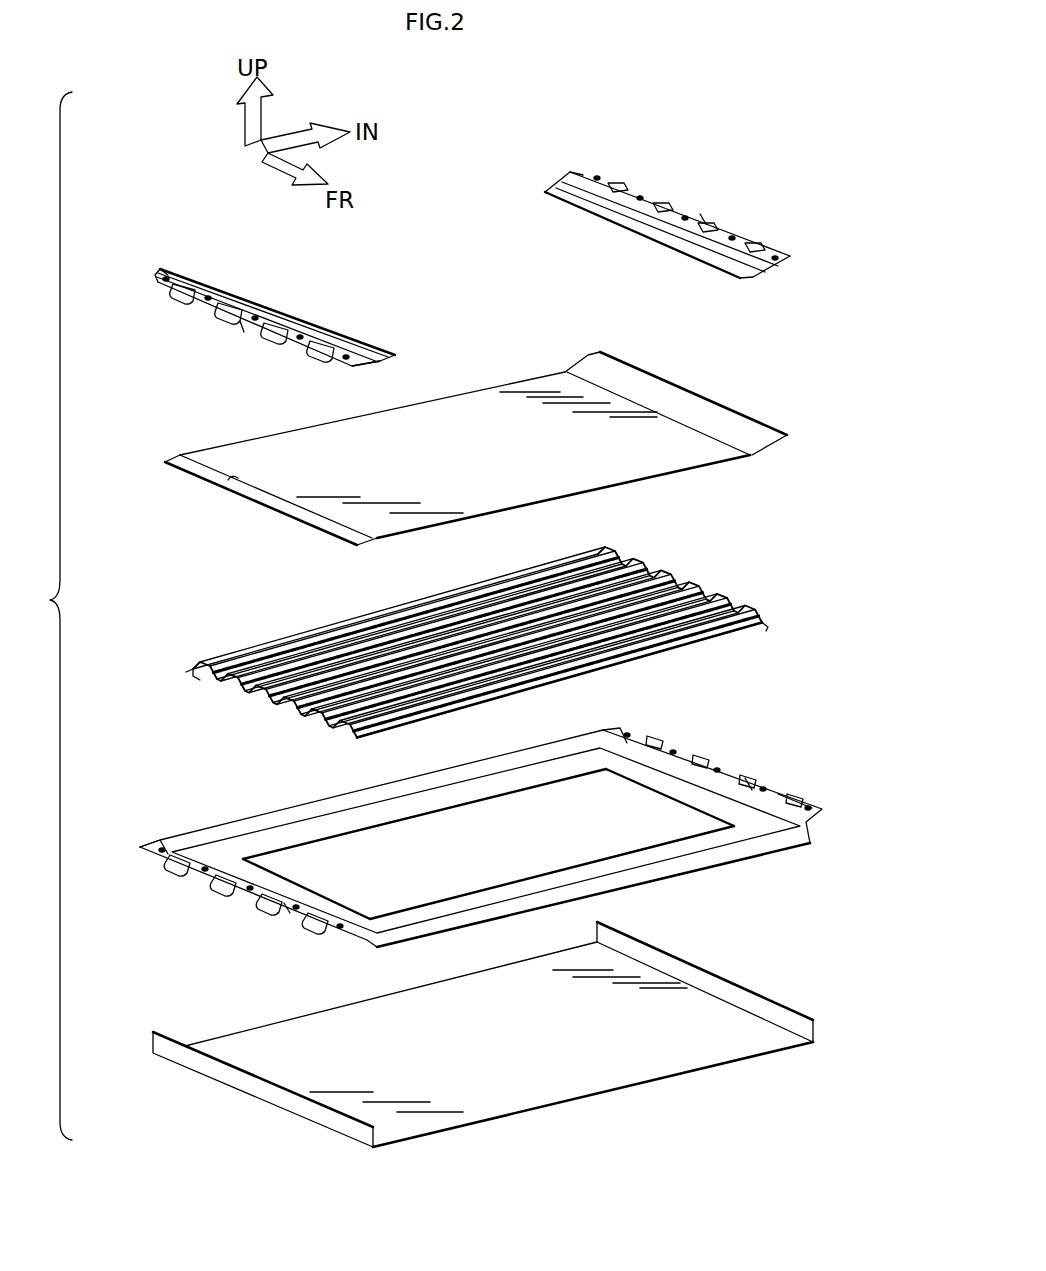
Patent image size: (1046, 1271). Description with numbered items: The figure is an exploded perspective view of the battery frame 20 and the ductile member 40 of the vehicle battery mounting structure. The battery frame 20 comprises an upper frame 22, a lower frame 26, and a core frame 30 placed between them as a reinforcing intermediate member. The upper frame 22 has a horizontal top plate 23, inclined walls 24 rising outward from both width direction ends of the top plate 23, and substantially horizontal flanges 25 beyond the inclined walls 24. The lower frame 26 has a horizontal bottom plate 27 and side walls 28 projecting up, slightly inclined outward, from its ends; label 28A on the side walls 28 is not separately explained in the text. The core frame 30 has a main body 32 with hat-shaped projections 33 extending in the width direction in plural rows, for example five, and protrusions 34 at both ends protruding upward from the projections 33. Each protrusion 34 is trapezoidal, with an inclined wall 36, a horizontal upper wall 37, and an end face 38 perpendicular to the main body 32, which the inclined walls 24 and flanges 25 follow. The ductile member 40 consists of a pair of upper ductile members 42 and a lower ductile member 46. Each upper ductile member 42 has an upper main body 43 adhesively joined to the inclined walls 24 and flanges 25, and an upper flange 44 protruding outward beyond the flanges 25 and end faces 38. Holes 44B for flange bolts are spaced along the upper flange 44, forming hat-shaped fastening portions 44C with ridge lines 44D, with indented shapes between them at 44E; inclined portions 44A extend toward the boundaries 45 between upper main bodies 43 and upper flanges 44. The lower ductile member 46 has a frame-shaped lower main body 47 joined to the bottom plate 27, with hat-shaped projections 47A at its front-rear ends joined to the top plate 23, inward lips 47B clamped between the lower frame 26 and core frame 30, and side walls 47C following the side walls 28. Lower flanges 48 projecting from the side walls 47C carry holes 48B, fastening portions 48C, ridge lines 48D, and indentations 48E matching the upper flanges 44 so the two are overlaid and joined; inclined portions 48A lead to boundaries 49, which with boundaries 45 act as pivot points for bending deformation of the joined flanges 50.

The battery frame 20 is at (652, 128).
The upper frame 22 is at (481, 388).
The top plate 23 is at (312, 452).
The inclined walls 24 is at (672, 402).
The flanges 25 is at (735, 410).
The lower frame 26 is at (412, 1146).
The bottom plate 27 is at (335, 1020).
The side walls 28 is at (700, 982).
The side wall upper edge 28A is at (167, 1040).
The core frame 30 is at (442, 600).
The main body 32 is at (600, 680).
The projections 33 is at (525, 597).
The protrusions 34 is at (704, 578).
The inclined walls 36 is at (620, 568).
The upper walls 37 is at (760, 618).
The end faces 38 is at (768, 621).
The ductile member 40 is at (475, 534).
The upper ductile members 42 is at (236, 323).
The upper main bodies 43 is at (298, 308).
The upper flanges 44 is at (216, 296).
The inclined portions 44A is at (200, 268).
The holes 44B is at (166, 279).
The fastening portion 44C is at (246, 333).
The ridge lines 44D is at (322, 358).
The tab portion 44E is at (172, 292).
The boundaries 45 is at (262, 298).
The lower ductile member 46 is at (740, 768).
The lower main body 47 is at (224, 828).
The projections 47A is at (425, 786).
The lips 47B is at (650, 780).
The side walls 47C is at (732, 802).
The lower flanges 48 is at (224, 880).
The inclined portions 48A is at (788, 810).
The holes 48B is at (161, 847).
The fastening portion 48C is at (293, 912).
The ridge lines 48D is at (165, 865).
The indentations 48E is at (262, 905).
The boundaries 49 is at (638, 728).
The flanges 50 is at (475, 534).